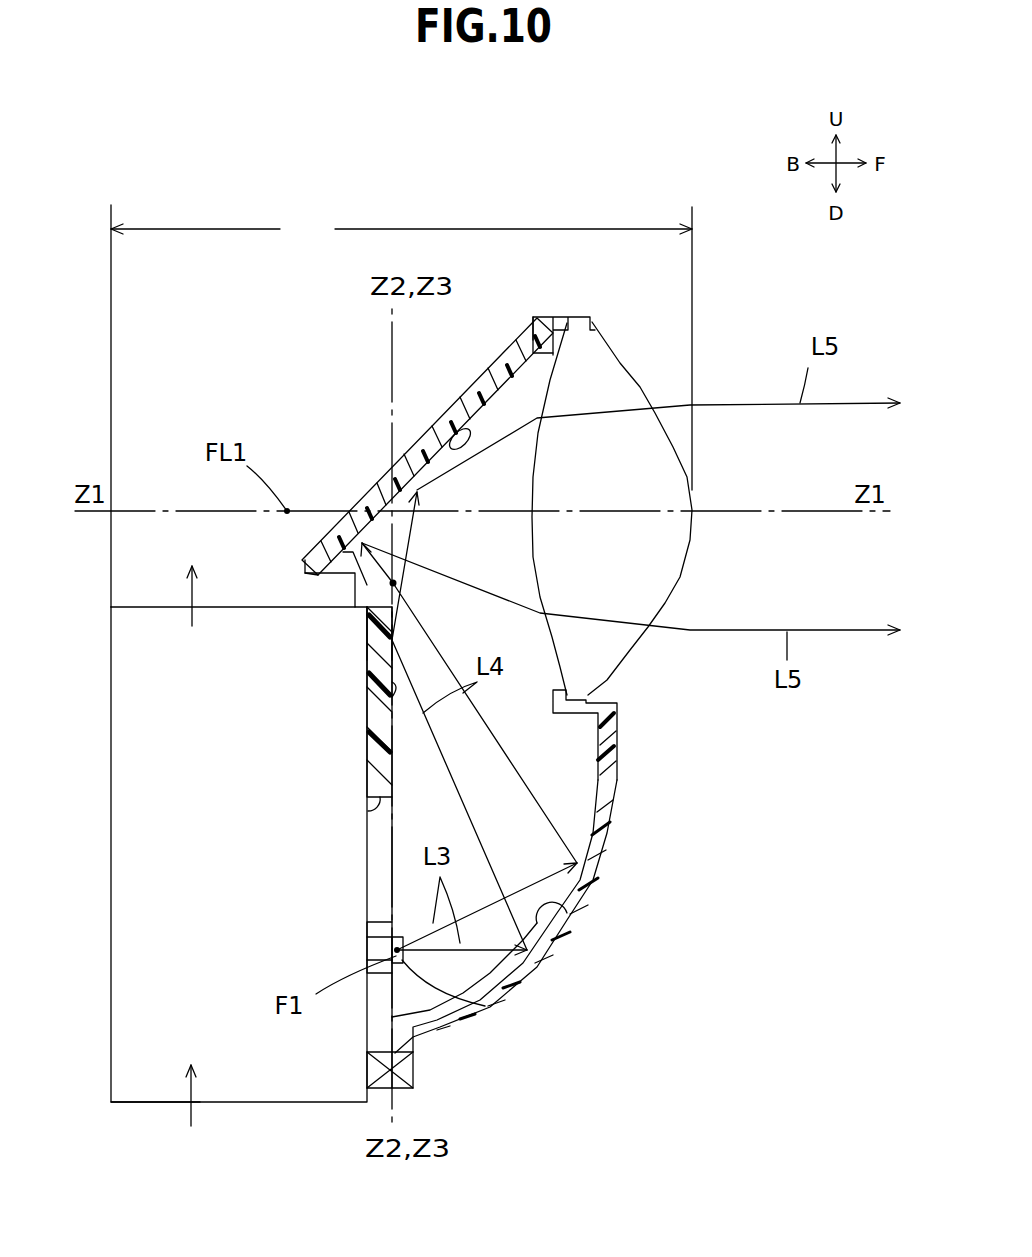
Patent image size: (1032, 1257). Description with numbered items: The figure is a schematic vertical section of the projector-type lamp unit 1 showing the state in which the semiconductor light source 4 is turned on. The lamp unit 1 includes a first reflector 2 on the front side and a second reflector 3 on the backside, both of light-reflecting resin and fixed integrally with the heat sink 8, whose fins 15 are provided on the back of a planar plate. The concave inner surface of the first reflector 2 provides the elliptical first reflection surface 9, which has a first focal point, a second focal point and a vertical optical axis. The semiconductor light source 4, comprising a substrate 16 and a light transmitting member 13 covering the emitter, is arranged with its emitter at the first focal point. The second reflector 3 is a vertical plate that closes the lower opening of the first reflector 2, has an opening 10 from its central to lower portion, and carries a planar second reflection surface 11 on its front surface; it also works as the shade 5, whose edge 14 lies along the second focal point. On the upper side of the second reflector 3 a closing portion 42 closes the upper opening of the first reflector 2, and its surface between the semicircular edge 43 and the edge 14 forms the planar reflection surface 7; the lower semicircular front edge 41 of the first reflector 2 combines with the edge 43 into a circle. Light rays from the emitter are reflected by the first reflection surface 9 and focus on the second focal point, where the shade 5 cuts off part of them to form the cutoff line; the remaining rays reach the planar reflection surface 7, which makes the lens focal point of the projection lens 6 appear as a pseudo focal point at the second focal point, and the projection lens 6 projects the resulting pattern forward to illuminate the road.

The lamp unit 1 is at (723, 297).
The first reflector 2 is at (607, 840).
The second reflector 3 is at (533, 318).
The semiconductor light source 4 is at (364, 931).
The shade 5 is at (376, 655).
The projection lens 6 is at (605, 650).
The planar reflection surface 7 is at (447, 437).
The heat sink 8 is at (238, 1092).
The first reflection surface 9 is at (567, 915).
The opening 10 is at (376, 803).
The second reflection surface 11 is at (368, 707).
The light transmitting member 13 is at (470, 1005).
The edge 14 is at (368, 607).
The fins 15 is at (141, 1094).
The substrate 16 is at (368, 941).
The front edge 41 is at (551, 703).
The closing portion 42 is at (466, 424).
The edge 43 is at (560, 317).